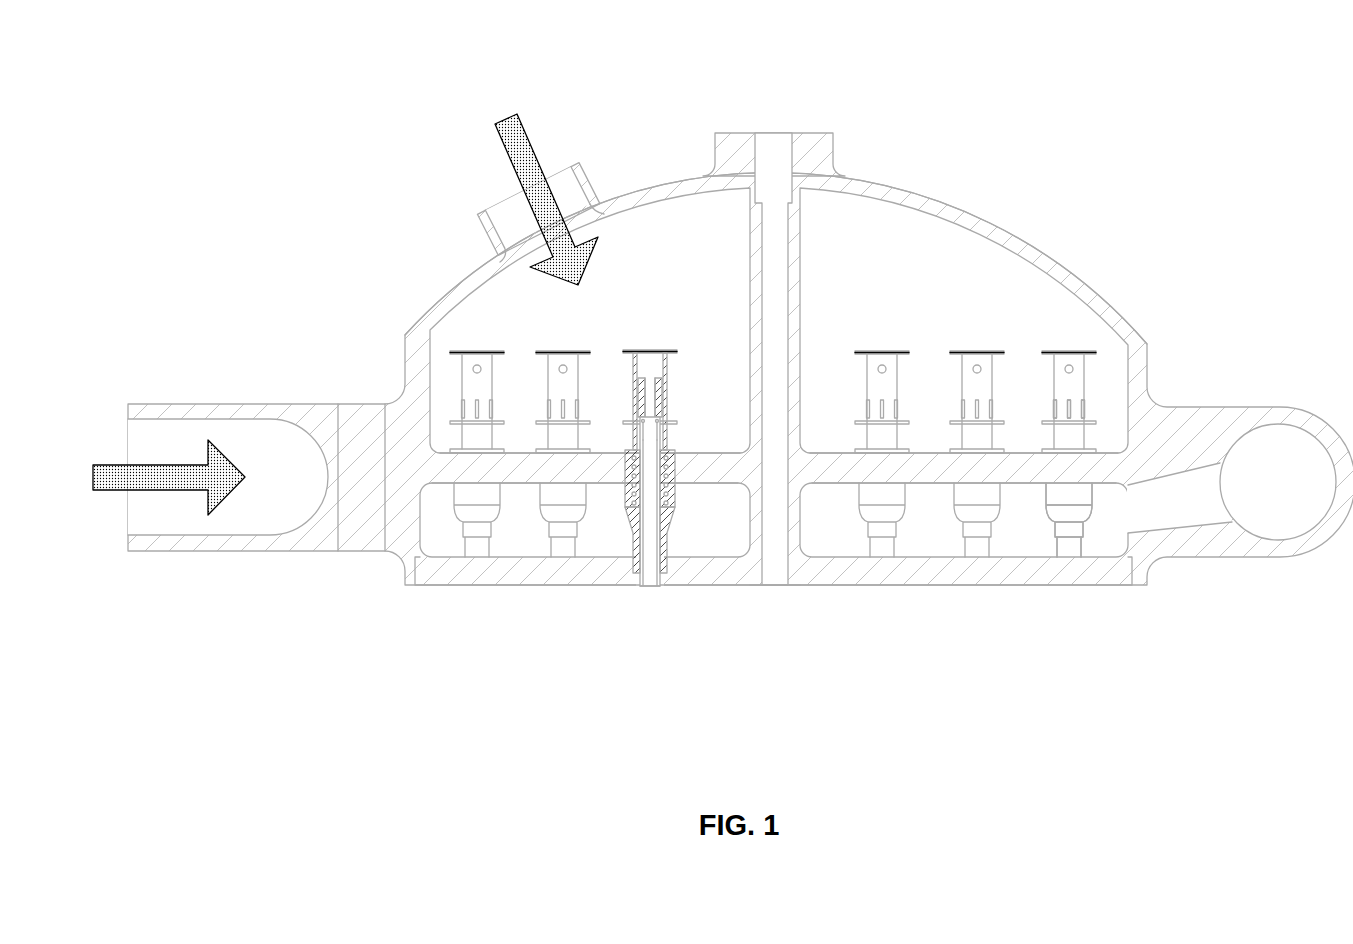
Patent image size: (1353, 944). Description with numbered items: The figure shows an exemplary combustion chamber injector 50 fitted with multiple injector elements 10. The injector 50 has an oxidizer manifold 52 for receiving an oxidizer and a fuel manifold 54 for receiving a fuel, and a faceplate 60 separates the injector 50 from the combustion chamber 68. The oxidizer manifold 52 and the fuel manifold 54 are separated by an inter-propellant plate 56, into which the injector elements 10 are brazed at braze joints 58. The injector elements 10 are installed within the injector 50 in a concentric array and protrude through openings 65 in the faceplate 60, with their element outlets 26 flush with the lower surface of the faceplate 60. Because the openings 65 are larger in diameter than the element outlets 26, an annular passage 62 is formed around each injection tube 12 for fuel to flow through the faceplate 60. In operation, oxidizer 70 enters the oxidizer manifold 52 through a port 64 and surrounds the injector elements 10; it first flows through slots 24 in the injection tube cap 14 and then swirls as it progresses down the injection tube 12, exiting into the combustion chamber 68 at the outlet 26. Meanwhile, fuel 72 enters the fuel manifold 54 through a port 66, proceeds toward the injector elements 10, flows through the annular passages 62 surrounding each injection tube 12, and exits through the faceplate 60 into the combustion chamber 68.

The injector element 10 is at (650, 350).
The injection tube 12 is at (1093, 492).
The injection tube cap 14 is at (658, 352).
The slots 24 is at (1072, 410).
The element outlet 26 is at (648, 587).
The combustion chamber injector 50 is at (1062, 168).
The oxidizer manifold 52 is at (676, 252).
The fuel manifold 54 is at (235, 443).
The inter-propellant plate 56 is at (928, 472).
The braze joints 58 is at (675, 470).
The faceplate 60 is at (445, 587).
The annular passage 62 is at (636, 587).
The port 64 is at (518, 225).
The openings 65 is at (636, 570).
The port 66 is at (127, 431).
The combustion chamber 68 is at (792, 693).
The oxidizer 70 is at (513, 153).
The fuel 72 is at (137, 478).